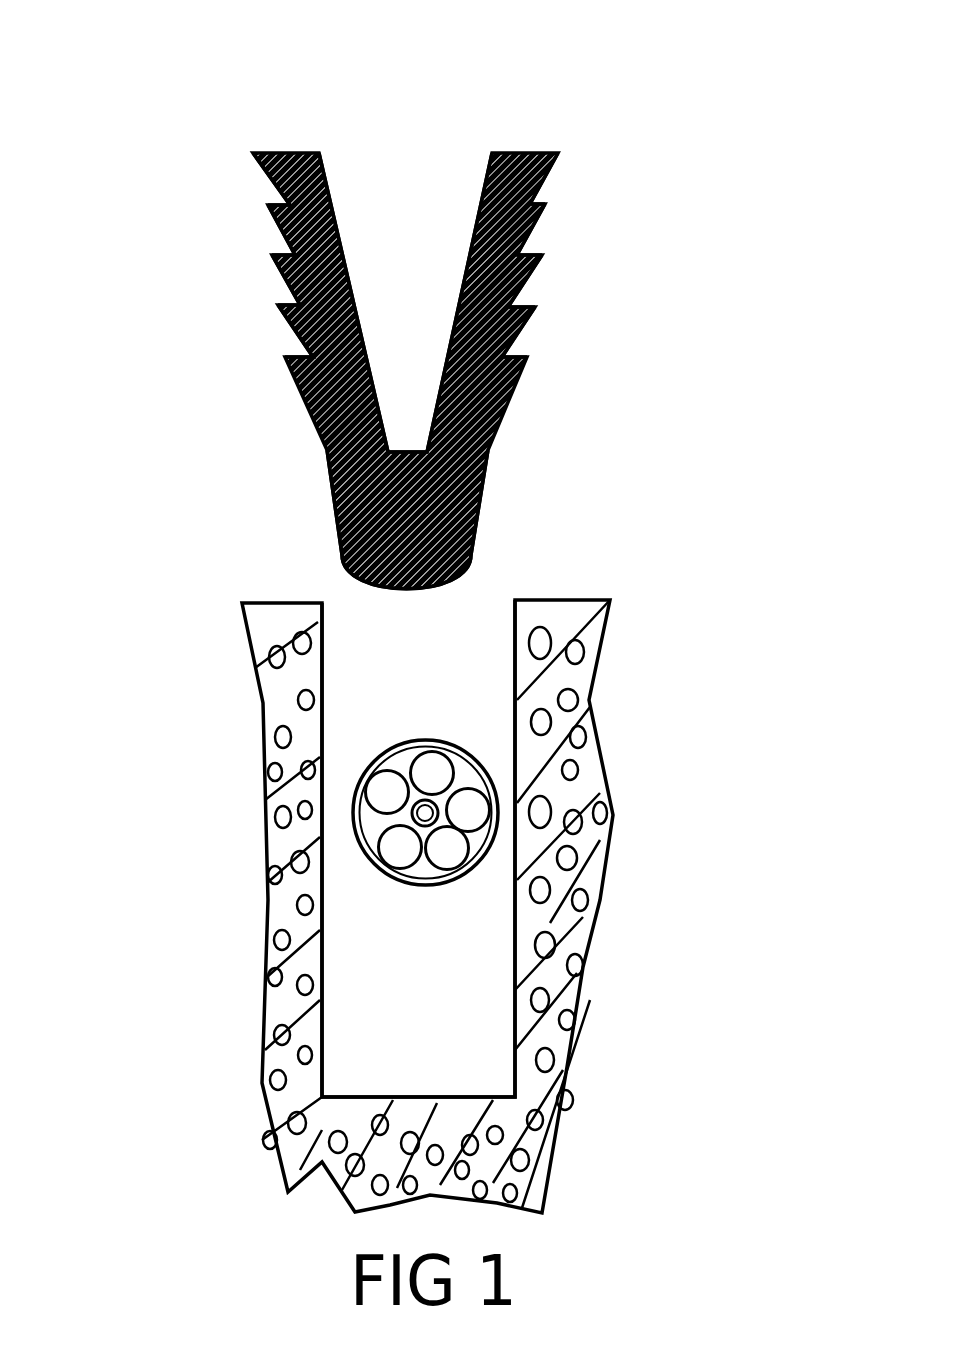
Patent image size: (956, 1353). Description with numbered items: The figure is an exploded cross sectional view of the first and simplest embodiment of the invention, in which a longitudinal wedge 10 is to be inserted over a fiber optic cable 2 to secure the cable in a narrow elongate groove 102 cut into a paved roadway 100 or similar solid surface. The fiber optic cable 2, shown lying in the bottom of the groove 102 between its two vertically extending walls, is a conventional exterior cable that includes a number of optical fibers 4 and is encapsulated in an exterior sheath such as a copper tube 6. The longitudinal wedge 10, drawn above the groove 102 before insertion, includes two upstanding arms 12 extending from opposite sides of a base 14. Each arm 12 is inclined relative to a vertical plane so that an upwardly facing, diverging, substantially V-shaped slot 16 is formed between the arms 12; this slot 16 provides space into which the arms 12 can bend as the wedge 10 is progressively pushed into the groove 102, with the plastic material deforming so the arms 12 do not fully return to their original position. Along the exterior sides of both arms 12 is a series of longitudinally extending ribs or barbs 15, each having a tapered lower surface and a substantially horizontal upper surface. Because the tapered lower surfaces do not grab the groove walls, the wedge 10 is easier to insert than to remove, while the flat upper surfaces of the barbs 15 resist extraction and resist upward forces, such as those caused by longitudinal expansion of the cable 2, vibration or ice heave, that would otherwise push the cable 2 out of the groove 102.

The longitudinal wedge 10 is at (616, 80).
The diverging slot 16 is at (400, 183).
The ribs or barbs 15 is at (277, 256).
The upstanding arms 12 is at (287, 278).
The base 14 is at (483, 497).
The paved roadway 100 is at (268, 708).
The groove 102 is at (405, 1032).
The fiber optic cable 2 is at (425, 776).
The optical fibers 4 is at (435, 855).
The copper tube 6 is at (428, 884).